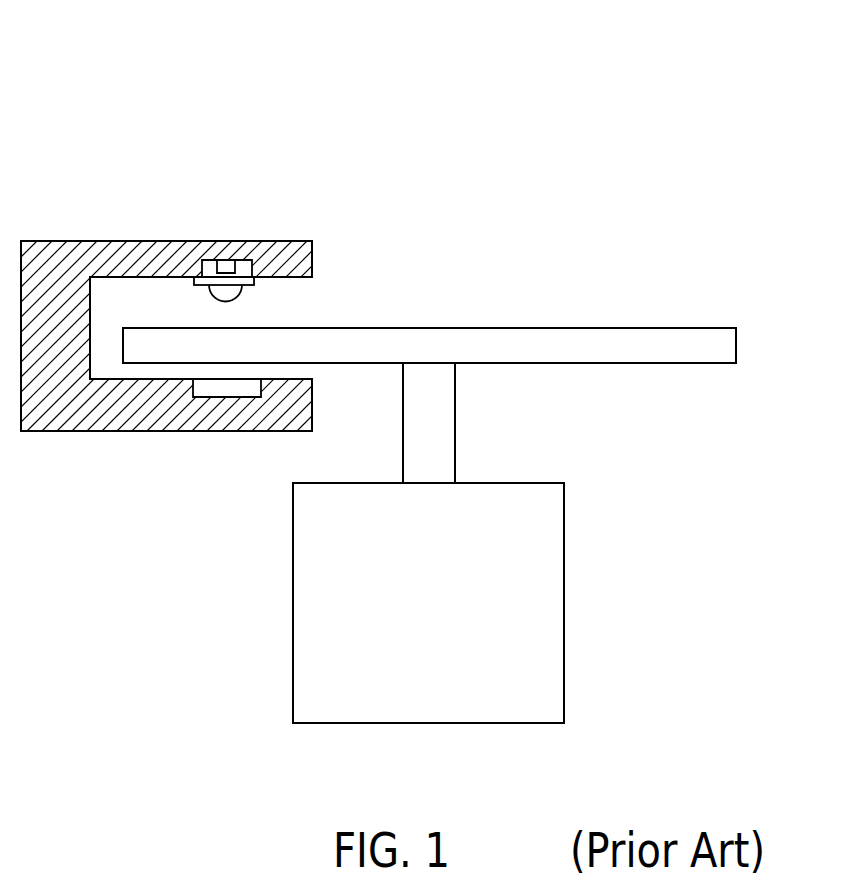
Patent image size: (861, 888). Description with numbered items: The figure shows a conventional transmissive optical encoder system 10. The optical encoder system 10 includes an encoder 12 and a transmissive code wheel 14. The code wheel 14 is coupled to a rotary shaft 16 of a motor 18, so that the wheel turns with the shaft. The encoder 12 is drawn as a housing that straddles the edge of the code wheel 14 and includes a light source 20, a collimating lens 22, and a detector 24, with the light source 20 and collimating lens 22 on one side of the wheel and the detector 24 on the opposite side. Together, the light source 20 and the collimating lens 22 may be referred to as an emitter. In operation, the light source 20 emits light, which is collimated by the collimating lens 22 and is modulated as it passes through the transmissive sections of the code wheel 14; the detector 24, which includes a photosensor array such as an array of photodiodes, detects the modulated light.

The transmissive optical encoder system 10 is at (136, 64).
The encoder 12 is at (100, 242).
The transmissive code wheel 14 is at (467, 328).
The rotary shaft 16 is at (455, 418).
The motor 18 is at (292, 582).
The light source 20 is at (226, 263).
The collimating lens 22 is at (243, 290).
The detector 24 is at (230, 388).